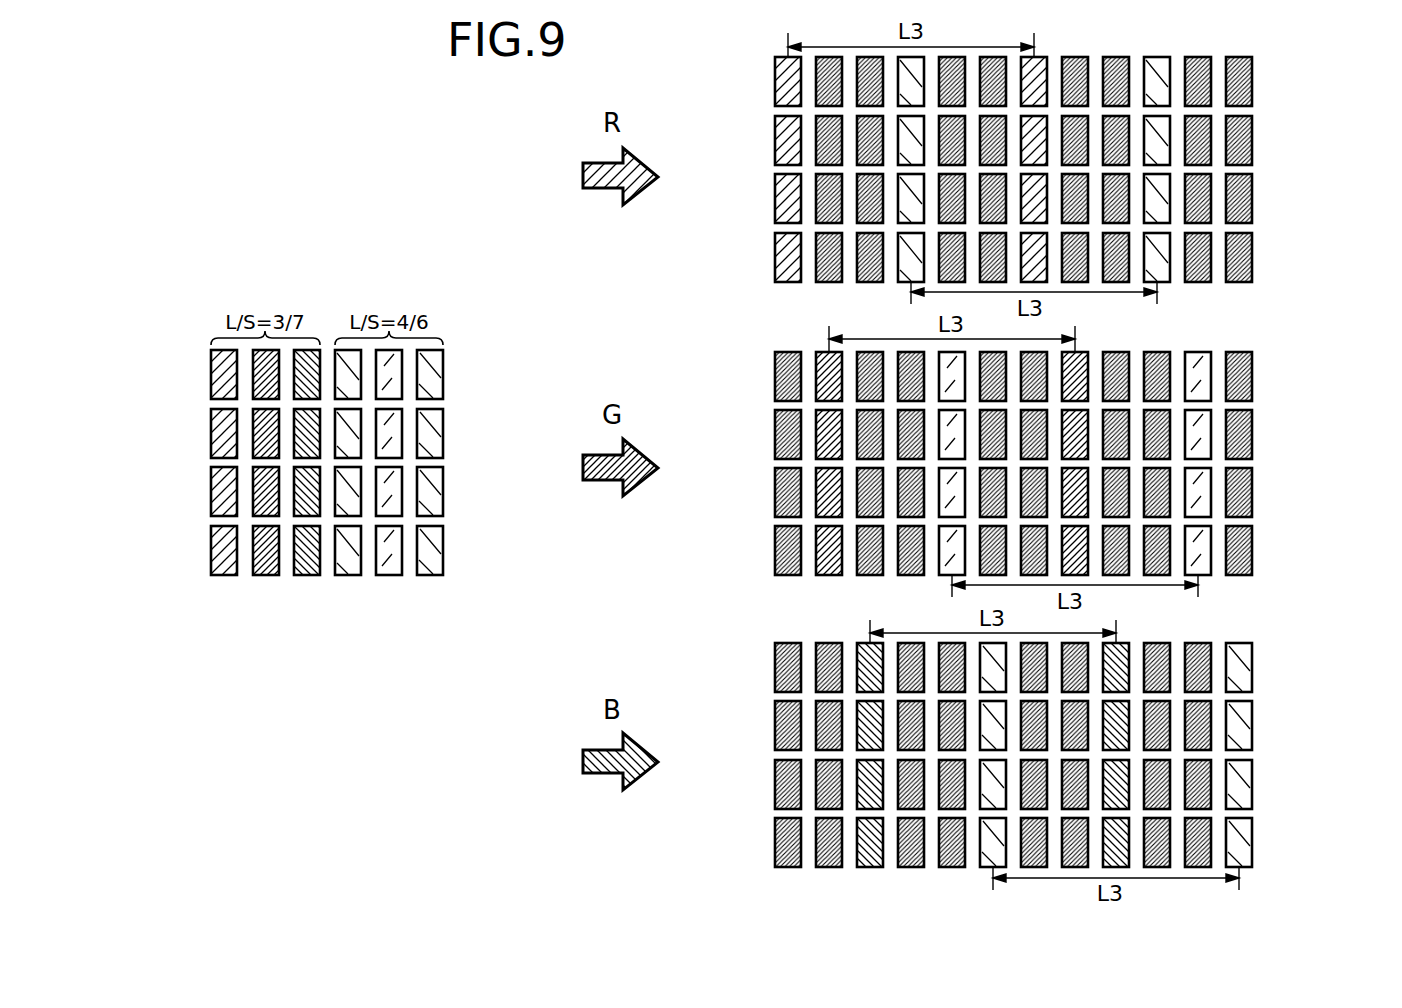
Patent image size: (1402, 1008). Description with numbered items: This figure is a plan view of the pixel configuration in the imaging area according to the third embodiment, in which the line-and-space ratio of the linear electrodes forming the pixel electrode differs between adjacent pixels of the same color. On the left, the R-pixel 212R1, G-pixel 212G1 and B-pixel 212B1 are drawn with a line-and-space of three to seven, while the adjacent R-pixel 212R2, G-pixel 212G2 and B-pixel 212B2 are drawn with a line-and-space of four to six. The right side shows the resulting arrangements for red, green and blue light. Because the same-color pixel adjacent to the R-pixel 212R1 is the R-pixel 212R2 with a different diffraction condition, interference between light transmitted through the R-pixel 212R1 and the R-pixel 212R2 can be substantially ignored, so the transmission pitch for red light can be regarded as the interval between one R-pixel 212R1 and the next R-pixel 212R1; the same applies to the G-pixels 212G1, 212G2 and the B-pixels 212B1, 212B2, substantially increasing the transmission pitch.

The R-pixel 212R1 is at (222, 372).
The G-pixel 212G1 is at (266, 430).
The B-pixel 212B1 is at (306, 492).
The R-pixel 212R2 is at (346, 577).
The G-pixel 212G2 is at (394, 577).
The B-pixel 212B2 is at (440, 540).